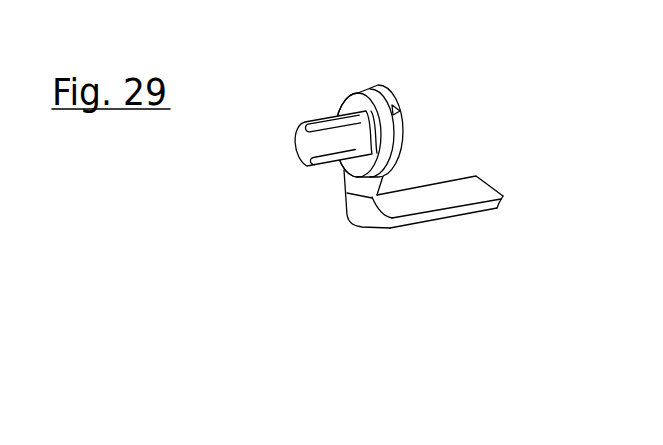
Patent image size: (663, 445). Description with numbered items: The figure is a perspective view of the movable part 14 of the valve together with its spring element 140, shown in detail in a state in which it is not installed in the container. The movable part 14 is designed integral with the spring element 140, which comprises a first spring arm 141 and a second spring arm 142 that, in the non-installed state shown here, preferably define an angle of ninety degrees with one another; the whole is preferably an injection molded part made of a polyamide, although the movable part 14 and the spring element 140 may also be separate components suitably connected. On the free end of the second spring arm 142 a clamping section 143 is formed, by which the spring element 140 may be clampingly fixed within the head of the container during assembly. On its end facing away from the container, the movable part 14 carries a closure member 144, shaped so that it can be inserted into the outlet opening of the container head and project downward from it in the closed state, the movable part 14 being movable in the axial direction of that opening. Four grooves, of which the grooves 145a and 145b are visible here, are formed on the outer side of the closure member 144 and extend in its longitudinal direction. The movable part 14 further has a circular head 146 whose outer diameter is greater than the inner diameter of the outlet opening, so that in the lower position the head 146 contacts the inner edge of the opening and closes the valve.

The movable part 14 is at (368, 231).
The spring element 140 is at (448, 299).
The first spring arm 141 is at (372, 201).
The second spring arm 142 is at (435, 213).
The clamping section 143 is at (498, 208).
The closure member 144 is at (281, 176).
The groove 145a is at (327, 122).
The groove 145b is at (342, 135).
The circular head 146 is at (393, 135).